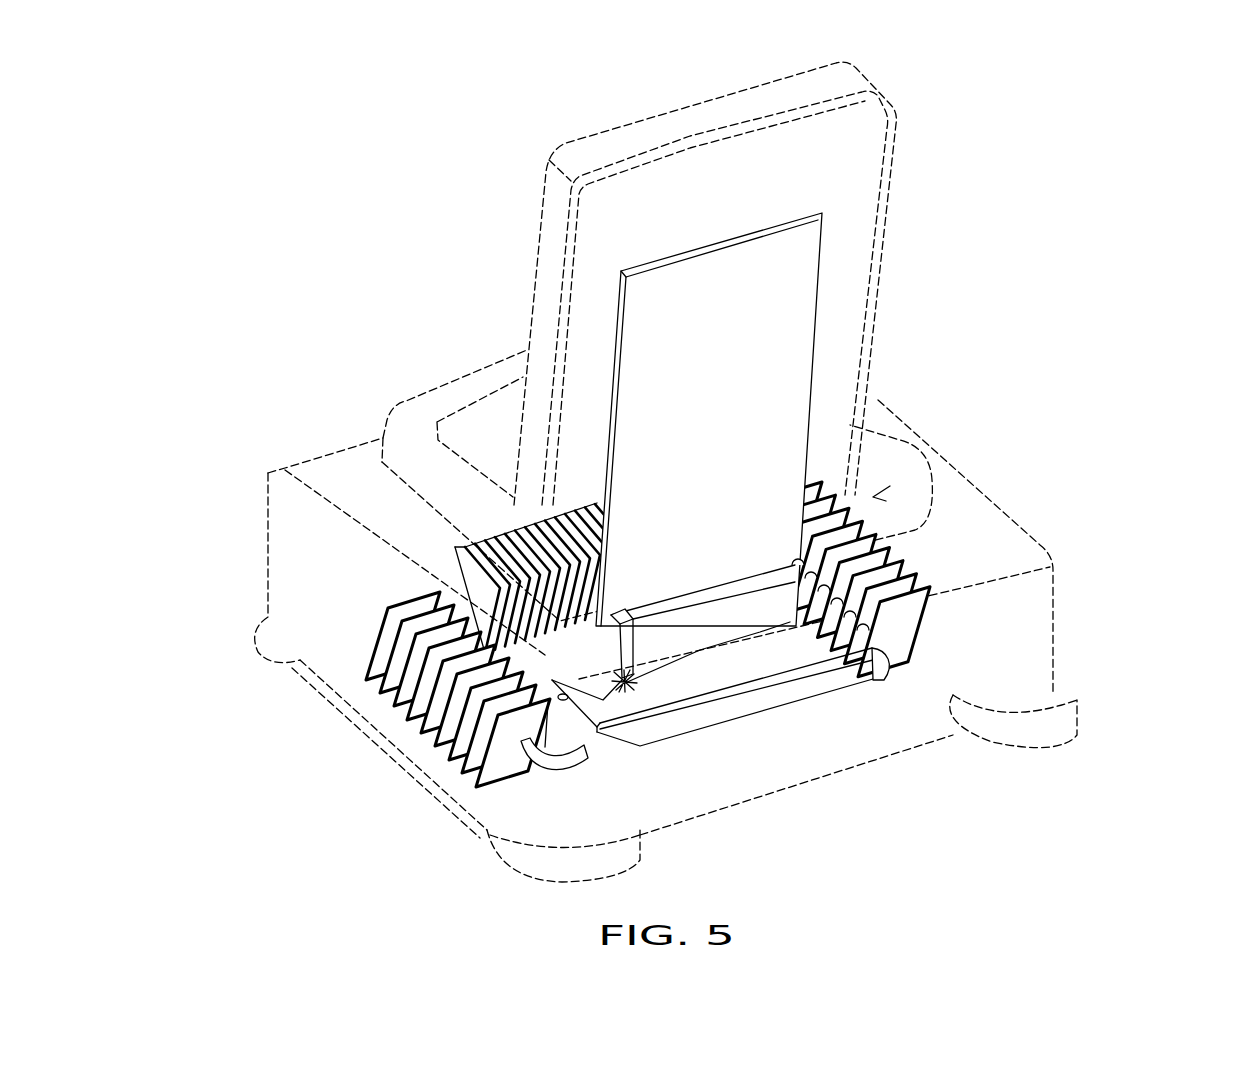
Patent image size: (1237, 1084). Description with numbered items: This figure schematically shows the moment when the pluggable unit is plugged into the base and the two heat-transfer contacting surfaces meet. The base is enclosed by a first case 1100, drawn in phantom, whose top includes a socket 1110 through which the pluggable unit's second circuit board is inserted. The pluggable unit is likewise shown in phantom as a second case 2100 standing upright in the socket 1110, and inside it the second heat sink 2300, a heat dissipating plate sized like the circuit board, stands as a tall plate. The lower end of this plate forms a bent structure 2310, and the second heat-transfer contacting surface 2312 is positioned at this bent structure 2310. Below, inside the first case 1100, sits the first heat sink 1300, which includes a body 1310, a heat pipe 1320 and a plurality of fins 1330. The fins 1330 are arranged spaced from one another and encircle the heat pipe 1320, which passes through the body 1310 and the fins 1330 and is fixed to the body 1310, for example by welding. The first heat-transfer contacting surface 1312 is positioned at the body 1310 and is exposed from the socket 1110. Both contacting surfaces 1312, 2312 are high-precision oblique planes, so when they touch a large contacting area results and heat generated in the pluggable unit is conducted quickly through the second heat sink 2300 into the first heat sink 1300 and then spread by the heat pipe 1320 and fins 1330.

The first case 1100 is at (1010, 630).
The socket 1110 is at (875, 496).
The first heat sink 1300 is at (432, 887).
The body 1310 is at (620, 742).
The first heat-transfer contacting surface 1312 is at (630, 686).
The heat pipe 1320 is at (553, 767).
The fins 1330 is at (433, 723).
The second case 2100 is at (838, 293).
The second heat sink 2300 is at (735, 425).
The bent structure 2310 is at (760, 603).
The second heat-transfer contacting surface 2312 is at (488, 615).